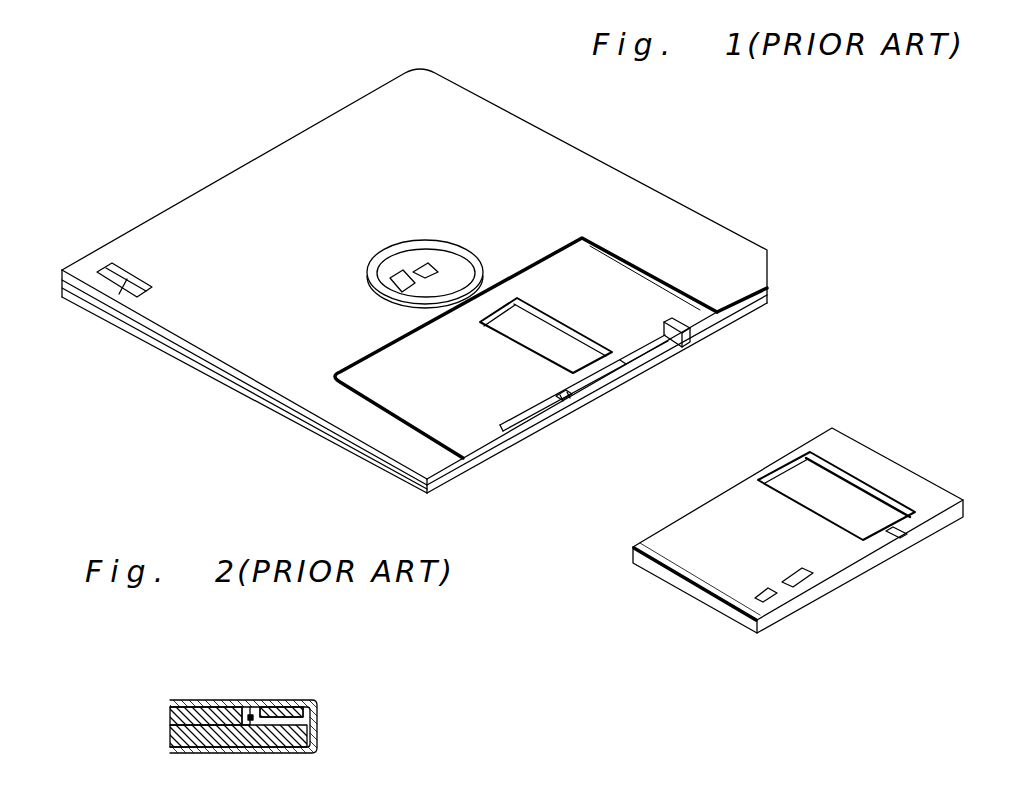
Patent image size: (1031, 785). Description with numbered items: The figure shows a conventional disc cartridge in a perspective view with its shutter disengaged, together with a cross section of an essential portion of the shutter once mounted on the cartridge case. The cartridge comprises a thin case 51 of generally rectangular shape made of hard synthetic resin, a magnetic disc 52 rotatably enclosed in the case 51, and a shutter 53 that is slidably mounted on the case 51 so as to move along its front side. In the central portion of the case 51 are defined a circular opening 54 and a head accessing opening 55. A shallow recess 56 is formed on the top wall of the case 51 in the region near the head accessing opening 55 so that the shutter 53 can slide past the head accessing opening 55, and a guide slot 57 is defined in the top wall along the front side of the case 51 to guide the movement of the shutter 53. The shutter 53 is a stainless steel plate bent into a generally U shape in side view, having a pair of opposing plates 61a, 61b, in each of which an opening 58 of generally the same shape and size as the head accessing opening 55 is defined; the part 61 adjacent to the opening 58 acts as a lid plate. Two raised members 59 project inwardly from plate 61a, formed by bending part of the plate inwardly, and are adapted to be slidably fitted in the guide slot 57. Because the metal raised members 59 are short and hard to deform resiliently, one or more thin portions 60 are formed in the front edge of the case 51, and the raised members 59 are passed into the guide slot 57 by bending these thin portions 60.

In FIG. 1, the case 51 is at (225, 348).
In FIG. 2, the case 51 is at (172, 715).
In FIG. 1, the magnetic disc 52 is at (530, 318).
In FIG. 1, the shutter 53 is at (778, 608).
In FIG. 2, the shutter 53 is at (318, 722).
In FIG. 1, the circular opening 54 is at (408, 246).
In FIG. 1, the head accessing opening 55 is at (553, 322).
In FIG. 1, the shallow recess 56 is at (645, 280).
In FIG. 1, the guide slot 57 is at (590, 372).
In FIG. 2, the guide slot 57 is at (243, 707).
In FIG. 1, the opening 58 is at (843, 497).
In FIG. 1, the raised members 59 is at (900, 538).
In FIG. 2, the raised members 59 is at (268, 707).
In FIG. 1, the thin portions 60 is at (563, 402).
In FIG. 2, the thin portions 60 is at (295, 703).
In FIG. 1, the lid plate 61 is at (722, 557).
In FIG. 1, the opposing plate 61a is at (650, 537).
In FIG. 1, the opposing plate 61b is at (633, 567).